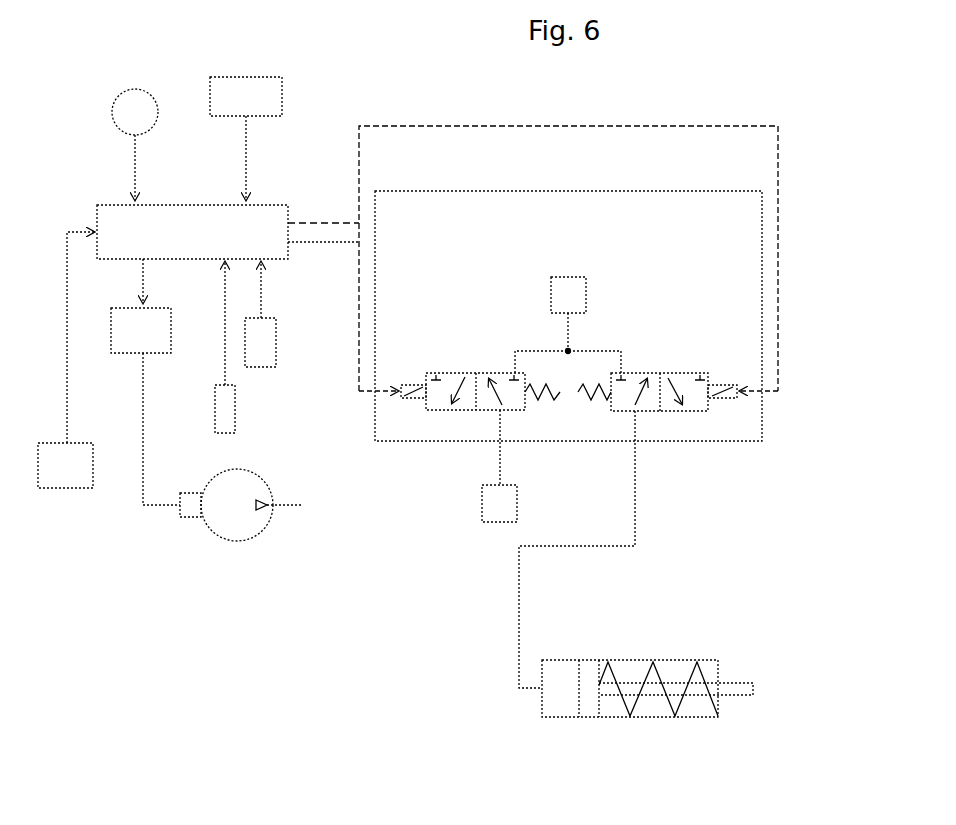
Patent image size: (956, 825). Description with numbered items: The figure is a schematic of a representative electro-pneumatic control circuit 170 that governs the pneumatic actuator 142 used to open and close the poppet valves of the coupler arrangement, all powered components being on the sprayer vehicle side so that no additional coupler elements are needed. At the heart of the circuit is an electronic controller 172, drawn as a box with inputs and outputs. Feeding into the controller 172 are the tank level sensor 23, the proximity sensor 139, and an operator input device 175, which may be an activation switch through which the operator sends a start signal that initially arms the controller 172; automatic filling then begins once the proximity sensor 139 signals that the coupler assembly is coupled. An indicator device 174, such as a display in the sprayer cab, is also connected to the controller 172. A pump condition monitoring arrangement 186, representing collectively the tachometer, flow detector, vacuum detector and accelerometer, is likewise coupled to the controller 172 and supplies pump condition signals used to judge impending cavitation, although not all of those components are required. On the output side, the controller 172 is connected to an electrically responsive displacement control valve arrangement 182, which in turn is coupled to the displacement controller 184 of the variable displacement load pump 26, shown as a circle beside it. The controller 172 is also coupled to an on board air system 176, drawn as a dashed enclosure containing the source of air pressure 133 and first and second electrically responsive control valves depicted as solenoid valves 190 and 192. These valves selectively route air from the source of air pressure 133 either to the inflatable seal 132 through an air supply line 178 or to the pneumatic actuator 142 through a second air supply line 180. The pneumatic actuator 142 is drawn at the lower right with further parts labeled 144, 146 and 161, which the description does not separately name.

The indicator device 174 is at (123, 93).
The operator input device 175 is at (262, 76).
The electronic controller 172 is at (264, 204).
The displacement control valve arrangement 182 is at (171, 325).
The tank level sensor 23 is at (276, 335).
The proximity sensor 139 is at (235, 400).
The pump condition monitoring arrangement 186 is at (66, 488).
The variable displacement load pump 26 is at (262, 482).
The displacement controller 184 is at (192, 517).
The electro-pneumatic control circuit 170 is at (420, 107).
The on board air system 176 is at (680, 187).
The source of air pressure 133 is at (603, 285).
The first solenoid valve 190 is at (432, 372).
The second solenoid valve 192 is at (703, 373).
The air supply line 178 is at (500, 457).
The inflatable seal 132 is at (482, 512).
The air supply line 180 is at (635, 508).
The pneumatic actuator 142 is at (686, 634).
The piston 144 is at (611, 717).
The piston rod 146 is at (738, 683).
The spring 161 is at (640, 720).